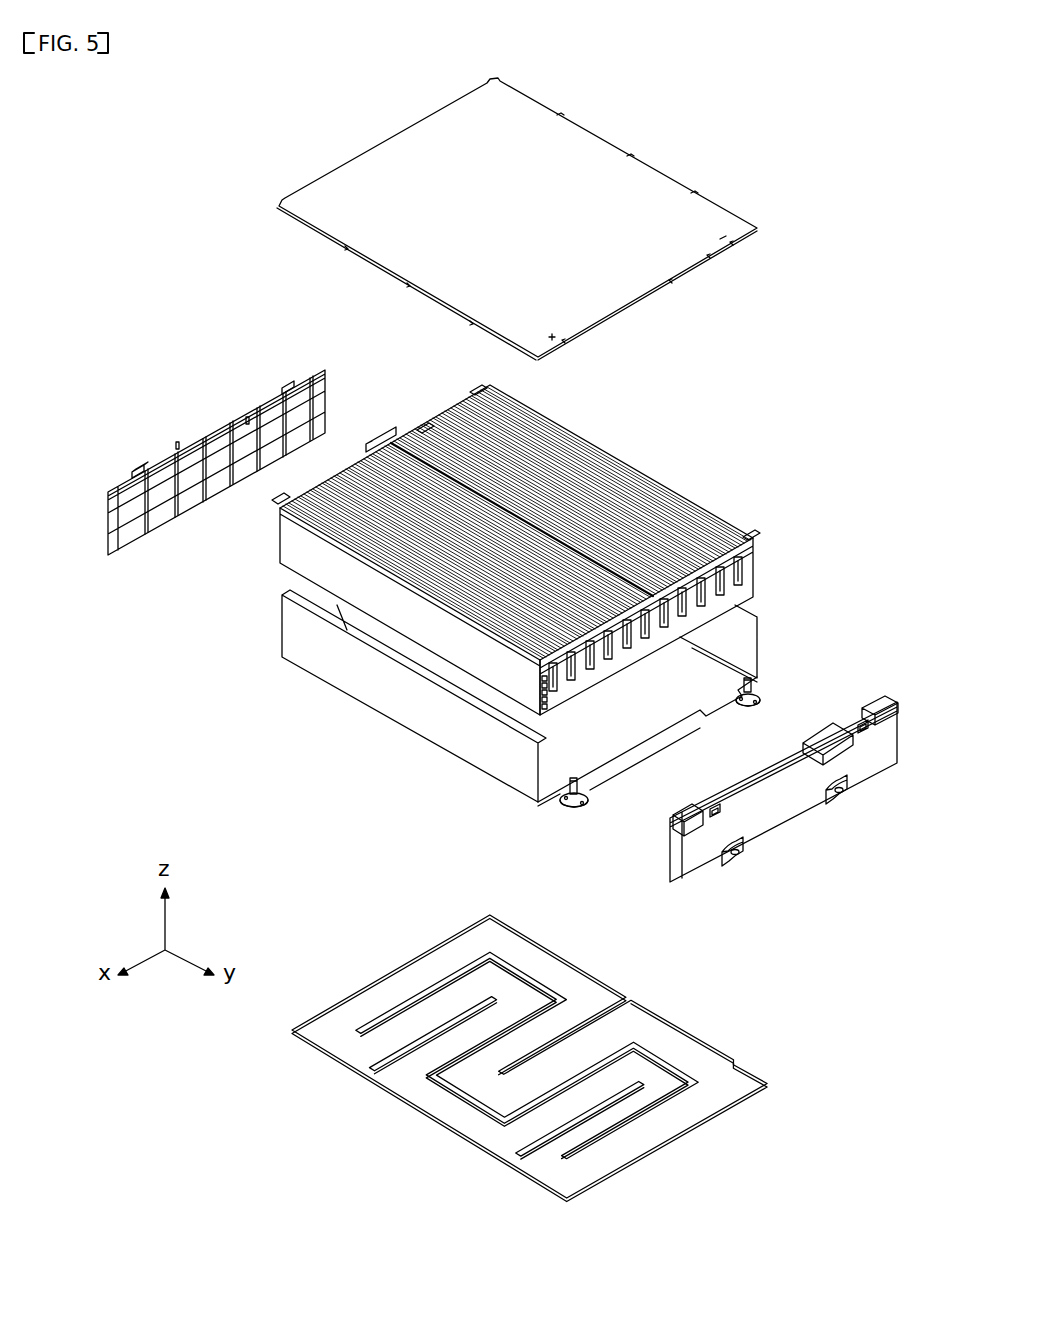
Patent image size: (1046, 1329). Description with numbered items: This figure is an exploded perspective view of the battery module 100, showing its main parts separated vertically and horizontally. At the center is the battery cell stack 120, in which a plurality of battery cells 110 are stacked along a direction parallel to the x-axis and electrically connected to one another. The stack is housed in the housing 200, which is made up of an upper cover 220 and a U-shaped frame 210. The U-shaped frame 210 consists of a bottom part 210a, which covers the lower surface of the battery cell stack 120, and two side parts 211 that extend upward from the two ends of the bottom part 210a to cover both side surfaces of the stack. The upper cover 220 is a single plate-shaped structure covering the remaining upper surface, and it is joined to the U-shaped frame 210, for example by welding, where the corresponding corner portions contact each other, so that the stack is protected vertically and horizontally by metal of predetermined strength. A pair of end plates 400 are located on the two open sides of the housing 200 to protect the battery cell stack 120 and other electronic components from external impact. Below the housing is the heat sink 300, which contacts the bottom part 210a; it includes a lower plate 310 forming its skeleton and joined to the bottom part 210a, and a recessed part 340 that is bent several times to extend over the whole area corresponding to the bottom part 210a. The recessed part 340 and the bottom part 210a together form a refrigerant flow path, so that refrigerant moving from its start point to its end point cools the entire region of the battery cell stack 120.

The battery module 100 is at (232, 99).
The battery cell 110 is at (580, 452).
The battery cell stack 120 is at (672, 470).
The housing 200 is at (848, 380).
The U-shaped frame 210 is at (305, 742).
The side part 211 is at (407, 709).
The bottom part 210a is at (578, 742).
The upper cover 220 is at (640, 182).
The heat sink 300 is at (368, 954).
The lower plate 310 is at (364, 1068).
The recessed part 340 is at (640, 1113).
The end plate 400 is at (220, 418).